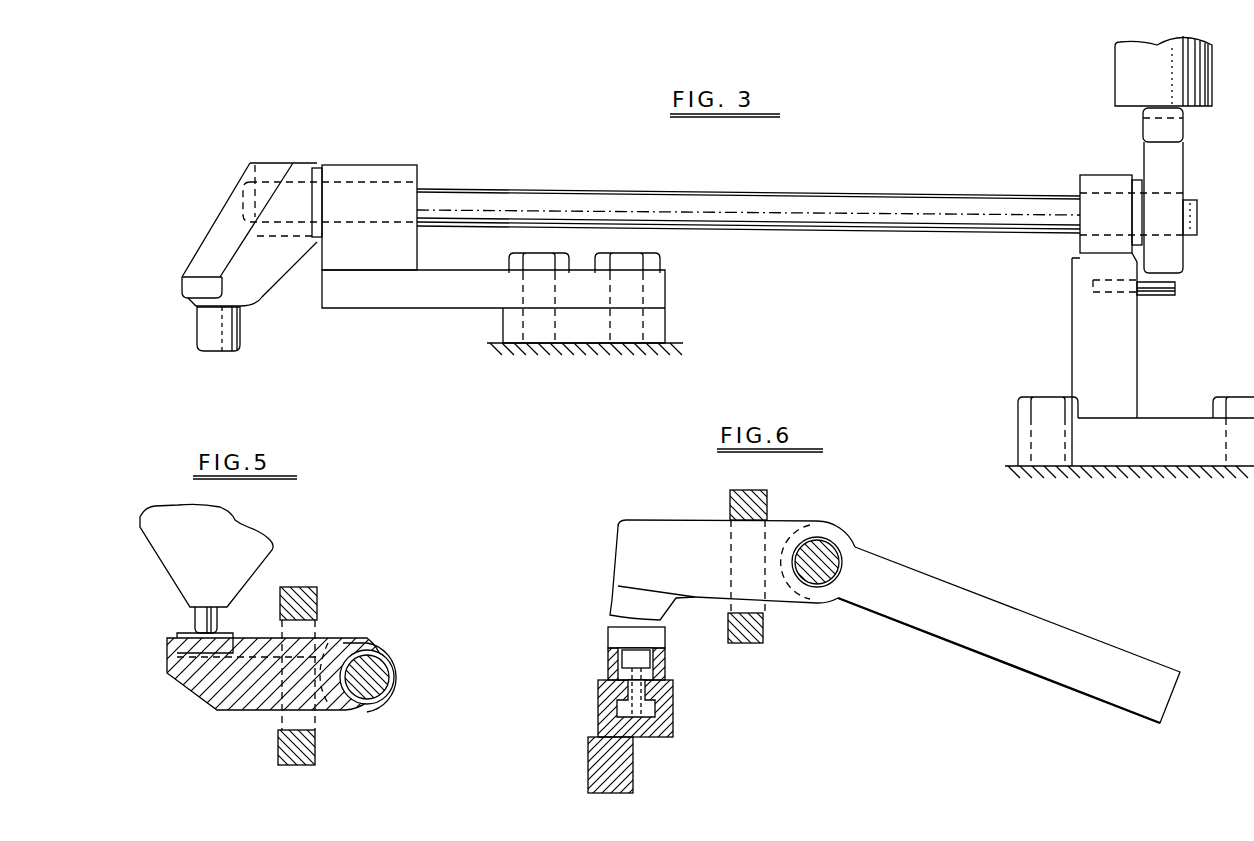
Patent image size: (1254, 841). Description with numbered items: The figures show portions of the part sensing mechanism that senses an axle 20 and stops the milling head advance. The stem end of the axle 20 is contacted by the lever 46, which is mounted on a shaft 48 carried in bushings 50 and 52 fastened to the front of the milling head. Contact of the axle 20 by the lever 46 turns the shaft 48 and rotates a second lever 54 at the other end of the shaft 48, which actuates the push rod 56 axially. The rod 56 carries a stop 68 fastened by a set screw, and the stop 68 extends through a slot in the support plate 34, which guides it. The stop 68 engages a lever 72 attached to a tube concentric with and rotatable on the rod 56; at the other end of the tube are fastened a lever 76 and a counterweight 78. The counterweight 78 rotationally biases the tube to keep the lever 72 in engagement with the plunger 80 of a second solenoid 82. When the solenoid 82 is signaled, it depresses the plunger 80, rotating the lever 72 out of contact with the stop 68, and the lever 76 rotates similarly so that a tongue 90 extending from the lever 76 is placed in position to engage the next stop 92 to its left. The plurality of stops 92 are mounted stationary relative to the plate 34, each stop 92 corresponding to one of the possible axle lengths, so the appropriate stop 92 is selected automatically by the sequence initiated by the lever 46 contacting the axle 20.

In FIG. 3, the axle 20 is at (1108, 83).
In FIG. 5, the support plate 34 is at (312, 605).
In FIG. 6, the support plate 34 is at (757, 502).
In FIG. 3, the lever 46 is at (1173, 191).
In FIG. 3, the shaft 48 is at (750, 198).
In FIG. 3, the bushing 50 is at (403, 170).
In FIG. 3, the bushing 52 is at (1090, 246).
In FIG. 3, the second lever 54 is at (218, 231).
In FIG. 3, the push rod 56 is at (232, 329).
In FIG. 5, the push rod 56 is at (373, 686).
In FIG. 6, the push rod 56 is at (813, 550).
In FIG. 5, the stop 68 is at (402, 664).
In FIG. 5, the lever 72 is at (220, 695).
In FIG. 6, the lever 76 is at (675, 532).
In FIG. 6, the counterweight 78 is at (1023, 621).
In FIG. 5, the plunger 80 is at (197, 622).
In FIG. 5, the second solenoid 82 is at (180, 568).
In FIG. 6, the tongue 90 is at (617, 602).
In FIG. 6, the stop 92 is at (657, 638).